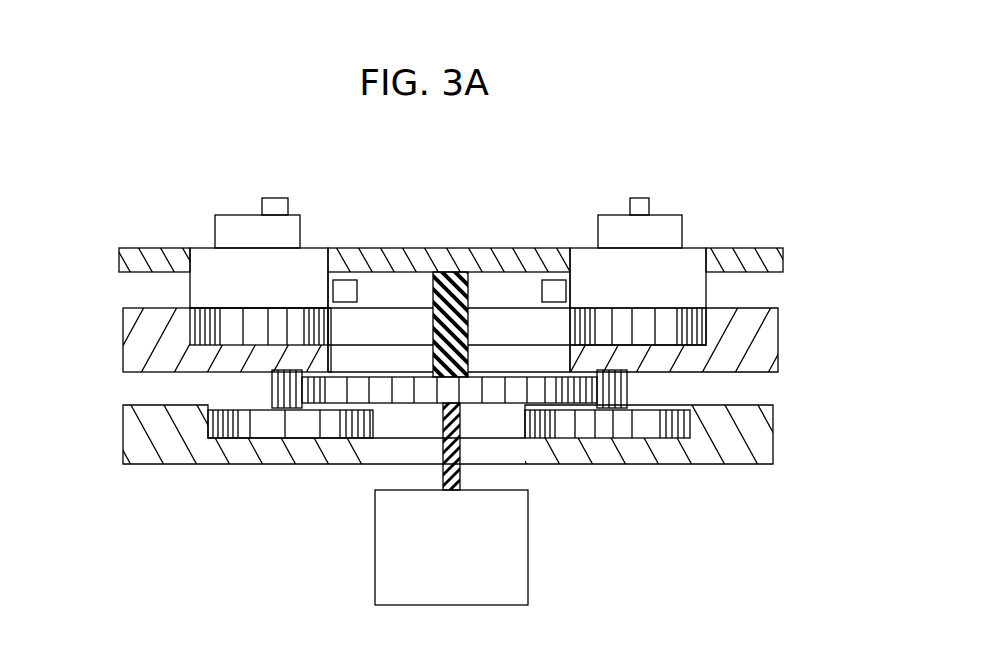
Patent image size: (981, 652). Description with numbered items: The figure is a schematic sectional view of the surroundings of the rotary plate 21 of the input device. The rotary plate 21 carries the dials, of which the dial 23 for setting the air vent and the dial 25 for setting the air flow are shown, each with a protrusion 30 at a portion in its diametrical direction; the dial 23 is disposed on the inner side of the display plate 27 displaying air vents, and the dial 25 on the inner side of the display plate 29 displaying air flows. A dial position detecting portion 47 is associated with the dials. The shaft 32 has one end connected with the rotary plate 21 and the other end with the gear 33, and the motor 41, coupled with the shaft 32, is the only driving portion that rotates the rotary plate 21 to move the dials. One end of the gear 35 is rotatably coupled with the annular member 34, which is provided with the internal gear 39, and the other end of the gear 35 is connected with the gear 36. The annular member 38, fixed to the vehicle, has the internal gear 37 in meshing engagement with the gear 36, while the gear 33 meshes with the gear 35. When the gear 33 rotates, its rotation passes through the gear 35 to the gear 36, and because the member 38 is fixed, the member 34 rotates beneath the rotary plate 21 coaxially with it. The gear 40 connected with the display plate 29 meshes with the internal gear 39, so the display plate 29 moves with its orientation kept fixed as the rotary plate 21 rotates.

The rotary plate 21 is at (401, 262).
The dial 23 is at (670, 240).
The dial 25 is at (230, 233).
The display plate 27 is at (697, 267).
The display plate 29 is at (202, 262).
The protrusion 30 is at (272, 212).
The shaft 32 is at (457, 272).
The gear 33 is at (497, 392).
The annular member 34 is at (142, 352).
The gear 35 is at (287, 395).
The gear 36 is at (255, 425).
The internal gear 37 is at (207, 425).
The annular member 38 is at (143, 455).
The internal gear 39 is at (193, 330).
The gear 40 is at (302, 318).
The motor 41 is at (500, 540).
The dial position detecting portion 47 is at (342, 287).